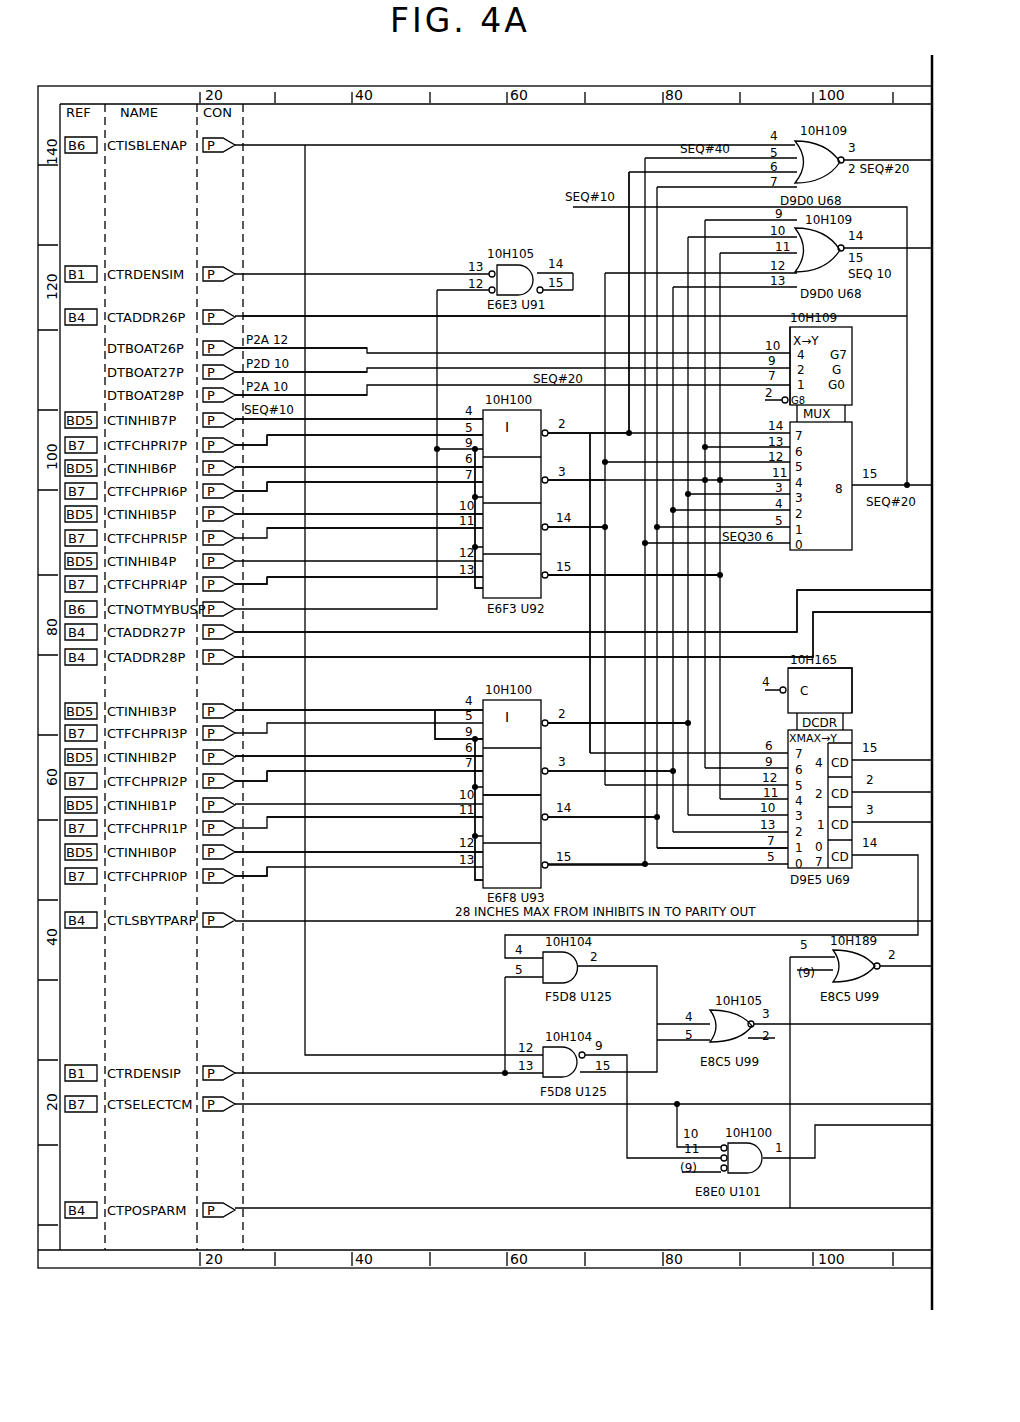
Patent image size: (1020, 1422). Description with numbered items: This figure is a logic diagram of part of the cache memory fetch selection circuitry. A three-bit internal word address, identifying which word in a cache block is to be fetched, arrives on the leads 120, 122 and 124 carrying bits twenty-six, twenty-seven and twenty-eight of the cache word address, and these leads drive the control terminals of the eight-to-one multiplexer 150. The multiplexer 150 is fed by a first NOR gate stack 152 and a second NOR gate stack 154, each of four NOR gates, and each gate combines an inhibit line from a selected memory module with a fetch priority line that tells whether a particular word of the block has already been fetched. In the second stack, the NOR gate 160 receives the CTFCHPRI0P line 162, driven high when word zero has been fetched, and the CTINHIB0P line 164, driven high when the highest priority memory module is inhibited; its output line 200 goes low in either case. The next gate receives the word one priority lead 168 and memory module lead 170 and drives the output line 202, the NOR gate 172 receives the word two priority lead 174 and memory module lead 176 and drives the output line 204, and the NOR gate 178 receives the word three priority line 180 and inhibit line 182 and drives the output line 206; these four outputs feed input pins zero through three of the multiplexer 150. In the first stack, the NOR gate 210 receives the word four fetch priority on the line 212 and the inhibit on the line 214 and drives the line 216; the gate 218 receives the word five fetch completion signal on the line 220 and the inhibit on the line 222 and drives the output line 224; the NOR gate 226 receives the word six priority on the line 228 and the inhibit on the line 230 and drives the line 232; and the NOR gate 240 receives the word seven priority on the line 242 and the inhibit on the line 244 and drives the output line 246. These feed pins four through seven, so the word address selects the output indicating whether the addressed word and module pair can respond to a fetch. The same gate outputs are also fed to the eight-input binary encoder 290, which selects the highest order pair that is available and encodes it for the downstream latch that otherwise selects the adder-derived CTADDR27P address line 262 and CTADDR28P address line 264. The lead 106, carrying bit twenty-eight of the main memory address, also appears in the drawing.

The lead 106 is at (535, 830).
The lead 120 is at (420, 347).
The lead 122 is at (347, 371).
The lead 124 is at (385, 394).
The multiplexer 150 is at (852, 387).
The first NOR gate stack 152 is at (549, 433).
The second NOR gate stack 154 is at (483, 700).
The NOR gate 160 is at (492, 878).
The CTFCHPRI0P line 162 is at (255, 876).
The CTINHIB0P line 164 is at (293, 852).
The 01 priority lead 168 is at (380, 822).
The 01 memory module lead 170 is at (343, 804).
The NOR gate 172 is at (537, 771).
The 02 priority lead 174 is at (290, 781).
The 02 memory module lead 176 is at (290, 756).
The NOR gate 178 is at (538, 723).
The 03 priority line 180 is at (372, 733).
The 03 inhibit line 182 is at (386, 710).
The output line 200 is at (600, 868).
The output line 202 is at (615, 830).
The output line 204 is at (592, 778).
The output line 206 is at (620, 712).
The NOR gate 210 is at (480, 588).
The line 212 is at (373, 577).
The line 214 is at (362, 528).
The line 216 is at (563, 595).
The gate 218 is at (535, 527).
The line 220 is at (260, 540).
The line 222 is at (280, 514).
The output line 224 is at (590, 535).
The NOR gate 226 is at (440, 513).
The line 228 is at (415, 434).
The line 230 is at (383, 467).
The line 232 is at (575, 480).
The NOR gate 240 is at (421, 330).
The line 242 is at (255, 445).
The line 244 is at (300, 419).
The output line 246 is at (628, 433).
The CTADDR27P address line 262 is at (865, 590).
The CTADDR28P address line 264 is at (855, 612).
The binary encoder 290 is at (848, 680).